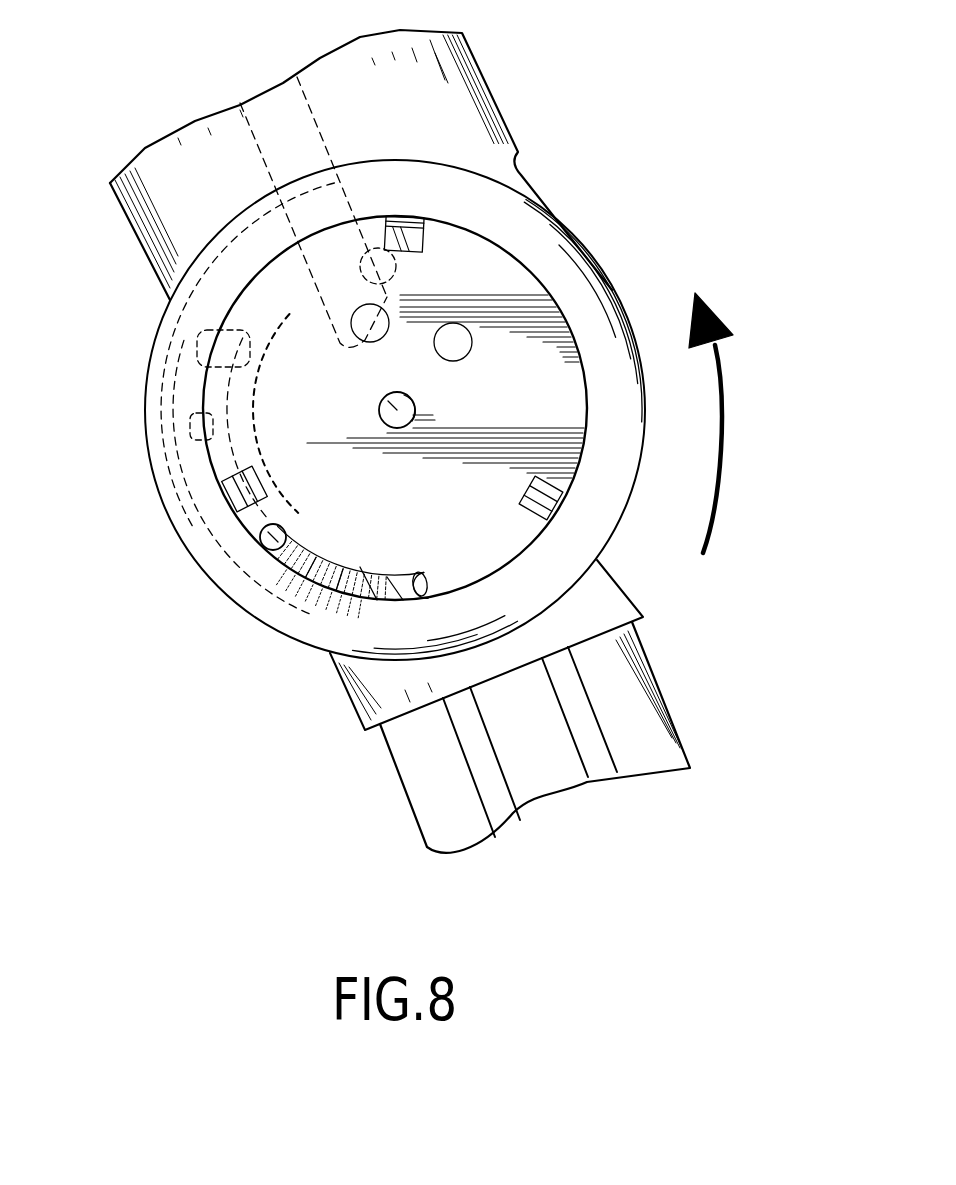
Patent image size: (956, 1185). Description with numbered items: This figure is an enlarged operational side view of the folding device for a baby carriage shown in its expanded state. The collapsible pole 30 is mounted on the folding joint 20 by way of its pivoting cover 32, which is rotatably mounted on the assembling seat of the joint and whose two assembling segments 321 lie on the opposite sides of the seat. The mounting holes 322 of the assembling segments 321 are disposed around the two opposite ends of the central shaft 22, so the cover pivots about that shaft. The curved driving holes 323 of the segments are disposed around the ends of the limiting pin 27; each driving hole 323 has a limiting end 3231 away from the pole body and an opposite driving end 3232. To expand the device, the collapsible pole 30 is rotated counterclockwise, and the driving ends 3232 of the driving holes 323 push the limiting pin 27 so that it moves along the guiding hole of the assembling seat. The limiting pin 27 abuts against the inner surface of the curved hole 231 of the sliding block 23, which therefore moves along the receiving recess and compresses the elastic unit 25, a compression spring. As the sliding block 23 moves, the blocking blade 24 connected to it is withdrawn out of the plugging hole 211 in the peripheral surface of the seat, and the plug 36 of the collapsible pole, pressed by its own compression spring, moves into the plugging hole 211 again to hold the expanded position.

The folding joint 20 is at (122, 382).
The central shaft 22 is at (379, 413).
The sliding block 23 is at (180, 524).
The blocking blade 24 is at (203, 268).
The elastic unit 25 is at (297, 617).
The limiting pin 27 is at (268, 541).
The collapsible pole 30 is at (618, 132).
The pivoting cover 32 is at (494, 82).
The plug 36 is at (287, 113).
The plugging hole 211 is at (410, 283).
The curved hole 231 is at (216, 483).
The assembling segments 321 is at (600, 266).
The mounting holes 322 is at (417, 411).
The driving holes 323 is at (388, 576).
The limiting end 3231 is at (408, 577).
The driving end 3232 is at (283, 526).